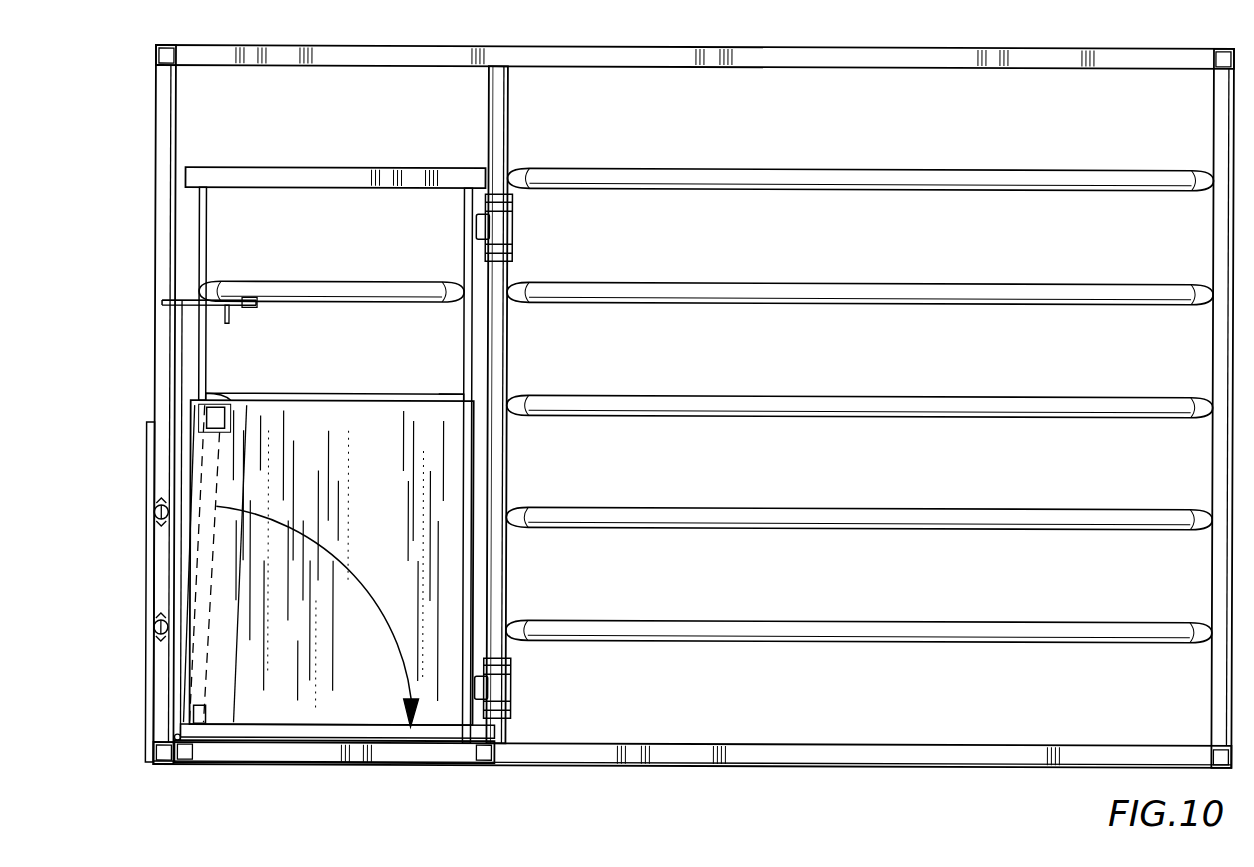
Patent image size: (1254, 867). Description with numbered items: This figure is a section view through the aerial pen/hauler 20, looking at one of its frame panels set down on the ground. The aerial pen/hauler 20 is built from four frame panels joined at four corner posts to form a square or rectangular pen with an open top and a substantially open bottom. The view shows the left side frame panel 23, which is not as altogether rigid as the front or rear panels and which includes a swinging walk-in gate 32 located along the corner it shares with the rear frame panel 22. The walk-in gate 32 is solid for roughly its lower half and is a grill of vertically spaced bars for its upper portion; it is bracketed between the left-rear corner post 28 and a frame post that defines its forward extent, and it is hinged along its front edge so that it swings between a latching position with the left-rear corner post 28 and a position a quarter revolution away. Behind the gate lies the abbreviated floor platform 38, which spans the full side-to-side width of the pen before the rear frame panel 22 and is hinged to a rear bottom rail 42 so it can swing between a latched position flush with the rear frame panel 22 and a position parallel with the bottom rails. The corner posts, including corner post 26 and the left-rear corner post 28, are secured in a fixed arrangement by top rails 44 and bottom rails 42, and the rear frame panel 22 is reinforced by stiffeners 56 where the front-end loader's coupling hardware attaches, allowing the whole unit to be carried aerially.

The aerial pen/hauler 20 is at (663, 413).
The side frame panel 23 is at (663, 413).
The top rail 44 is at (712, 33).
The rear frame panel 22 is at (241, 405).
The left-rear corner post 28 is at (180, 107).
The corner post 26 is at (1214, 122).
The walk-in gate 32 is at (418, 280).
The abbreviated floor platform 38 is at (228, 421).
The bottom rail 42 is at (162, 754).
The stiffener 56 is at (146, 452).